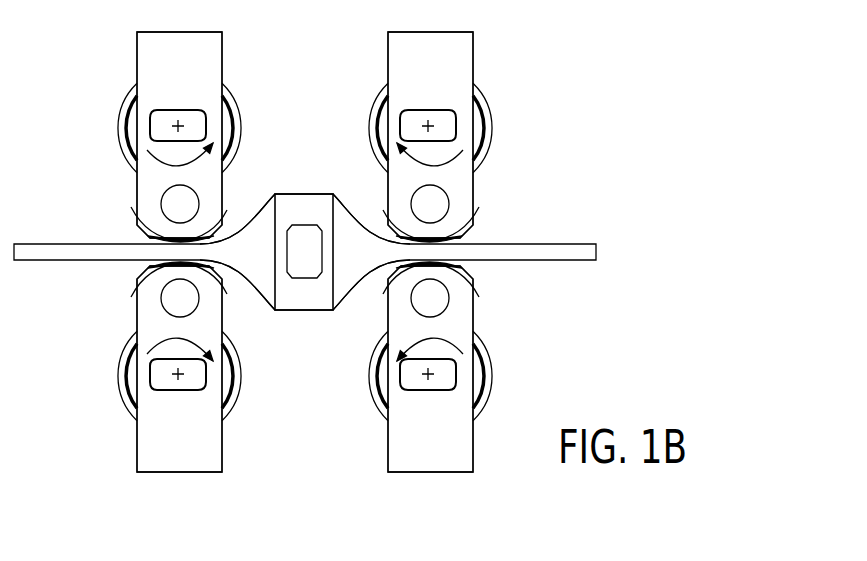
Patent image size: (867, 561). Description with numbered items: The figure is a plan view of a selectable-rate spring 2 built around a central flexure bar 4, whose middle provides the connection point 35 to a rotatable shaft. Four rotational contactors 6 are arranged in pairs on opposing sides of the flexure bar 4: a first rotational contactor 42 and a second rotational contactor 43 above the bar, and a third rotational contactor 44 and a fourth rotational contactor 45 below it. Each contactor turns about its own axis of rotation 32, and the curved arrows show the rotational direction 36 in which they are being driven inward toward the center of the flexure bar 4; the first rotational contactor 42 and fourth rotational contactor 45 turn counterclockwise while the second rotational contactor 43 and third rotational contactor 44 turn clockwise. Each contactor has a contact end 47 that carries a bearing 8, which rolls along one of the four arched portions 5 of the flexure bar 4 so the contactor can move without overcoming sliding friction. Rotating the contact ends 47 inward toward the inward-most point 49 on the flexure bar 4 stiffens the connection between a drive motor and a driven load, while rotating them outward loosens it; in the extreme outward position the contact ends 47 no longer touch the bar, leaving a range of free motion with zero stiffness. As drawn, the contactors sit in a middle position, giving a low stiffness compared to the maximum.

The selectable-rate spring 2 is at (336, 254).
The flexure bar 4 is at (306, 207).
The arched portion 5 is at (249, 216).
The rotational contactor 6 is at (195, 72).
The bearing 8 is at (147, 237).
The axis of rotation 32 is at (100, 402).
The connection point 35 is at (305, 263).
The rotational direction 36 is at (158, 165).
The first rotational contactor 42 is at (172, 40).
The second rotational contactor 43 is at (432, 37).
The third rotational contactor 44 is at (178, 462).
The fourth rotational contactor 45 is at (428, 462).
The contact end 47 is at (131, 205).
The inward-most point 49 is at (255, 208).